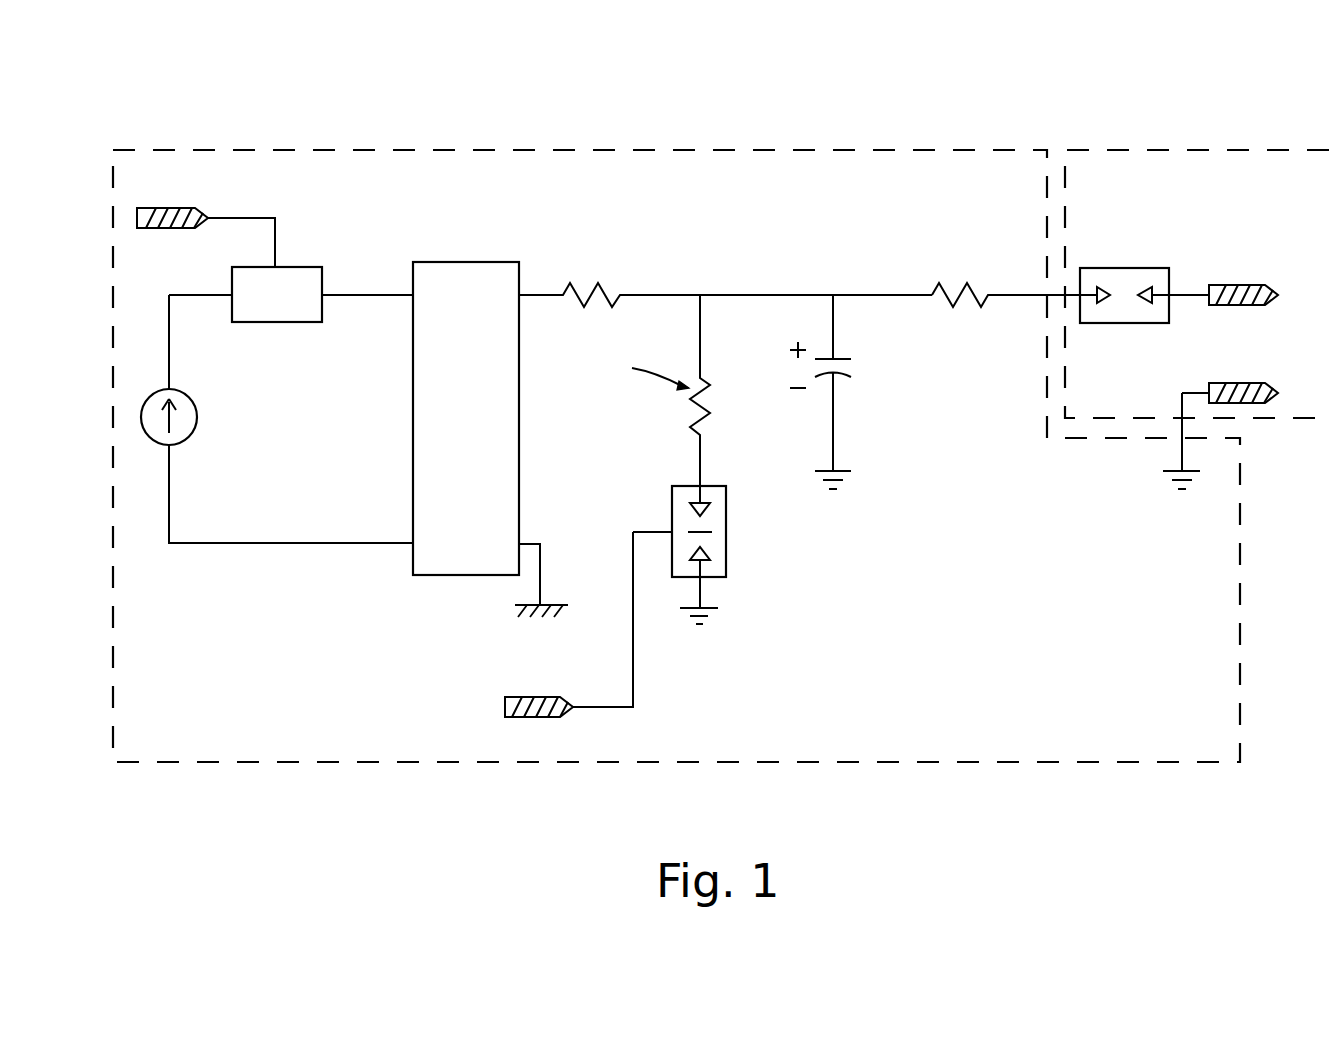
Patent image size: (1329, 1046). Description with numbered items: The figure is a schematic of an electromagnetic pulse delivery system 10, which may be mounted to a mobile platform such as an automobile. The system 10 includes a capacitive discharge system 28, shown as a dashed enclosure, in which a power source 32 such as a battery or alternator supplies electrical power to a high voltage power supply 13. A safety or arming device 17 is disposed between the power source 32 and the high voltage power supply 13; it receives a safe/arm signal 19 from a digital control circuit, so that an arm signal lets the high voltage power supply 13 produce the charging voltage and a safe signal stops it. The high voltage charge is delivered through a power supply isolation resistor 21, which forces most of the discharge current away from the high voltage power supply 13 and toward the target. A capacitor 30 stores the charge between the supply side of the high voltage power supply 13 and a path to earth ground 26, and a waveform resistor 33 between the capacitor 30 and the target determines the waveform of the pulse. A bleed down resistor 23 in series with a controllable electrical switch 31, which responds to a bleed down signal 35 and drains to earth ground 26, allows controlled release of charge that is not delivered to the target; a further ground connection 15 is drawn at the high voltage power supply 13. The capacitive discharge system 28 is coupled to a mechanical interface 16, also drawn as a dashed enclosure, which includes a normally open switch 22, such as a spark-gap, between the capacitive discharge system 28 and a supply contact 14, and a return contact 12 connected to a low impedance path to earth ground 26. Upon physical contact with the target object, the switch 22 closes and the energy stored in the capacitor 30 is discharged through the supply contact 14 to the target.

The electromagnetic pulse delivery system 10 is at (288, 109).
The return contact 12 is at (1270, 404).
The high voltage power supply 13 is at (413, 557).
The supply contact 14 is at (1258, 285).
The chassis ground 15 is at (553, 603).
The mechanical interface 16 is at (1202, 144).
The safety or arming device 17 is at (322, 308).
The safe/arm signal 19 is at (170, 230).
The power supply isolation resistor 21 is at (618, 283).
The switch 22 is at (1108, 323).
The bleed down resistor 23 is at (708, 412).
The earth ground 26 is at (712, 610).
The capacitive discharge system 28 is at (674, 145).
The capacitor 30 is at (841, 359).
The controllable electrical switch 31 is at (726, 525).
The power source 32 is at (140, 422).
The waveform resistor 33 is at (932, 292).
The bleed down signal 35 is at (515, 697).